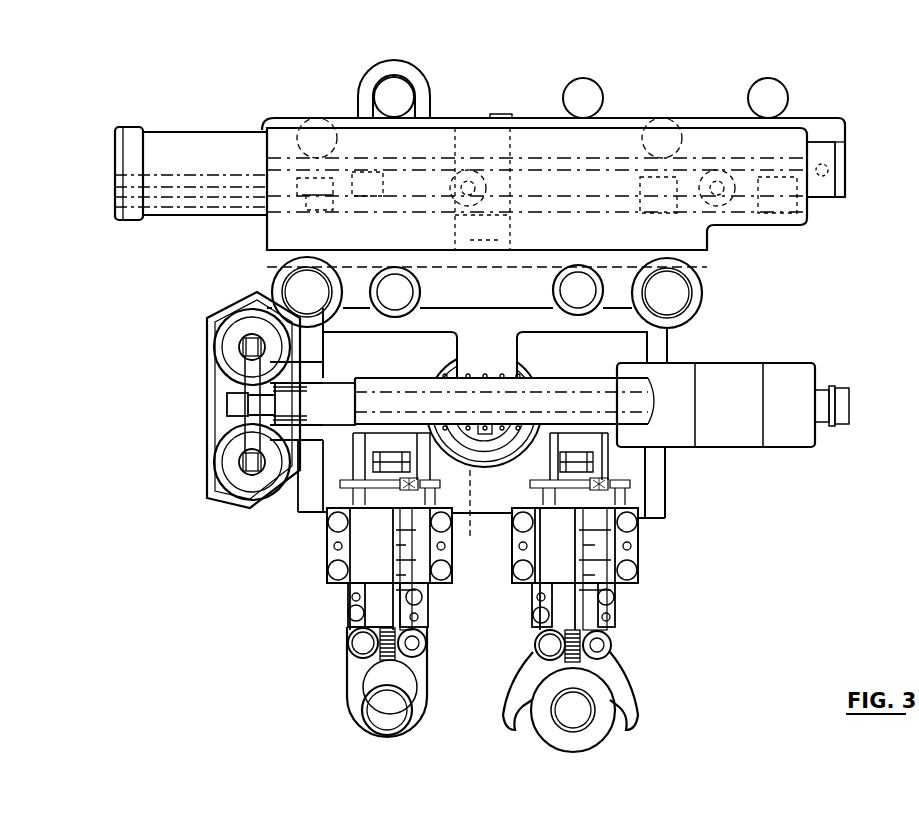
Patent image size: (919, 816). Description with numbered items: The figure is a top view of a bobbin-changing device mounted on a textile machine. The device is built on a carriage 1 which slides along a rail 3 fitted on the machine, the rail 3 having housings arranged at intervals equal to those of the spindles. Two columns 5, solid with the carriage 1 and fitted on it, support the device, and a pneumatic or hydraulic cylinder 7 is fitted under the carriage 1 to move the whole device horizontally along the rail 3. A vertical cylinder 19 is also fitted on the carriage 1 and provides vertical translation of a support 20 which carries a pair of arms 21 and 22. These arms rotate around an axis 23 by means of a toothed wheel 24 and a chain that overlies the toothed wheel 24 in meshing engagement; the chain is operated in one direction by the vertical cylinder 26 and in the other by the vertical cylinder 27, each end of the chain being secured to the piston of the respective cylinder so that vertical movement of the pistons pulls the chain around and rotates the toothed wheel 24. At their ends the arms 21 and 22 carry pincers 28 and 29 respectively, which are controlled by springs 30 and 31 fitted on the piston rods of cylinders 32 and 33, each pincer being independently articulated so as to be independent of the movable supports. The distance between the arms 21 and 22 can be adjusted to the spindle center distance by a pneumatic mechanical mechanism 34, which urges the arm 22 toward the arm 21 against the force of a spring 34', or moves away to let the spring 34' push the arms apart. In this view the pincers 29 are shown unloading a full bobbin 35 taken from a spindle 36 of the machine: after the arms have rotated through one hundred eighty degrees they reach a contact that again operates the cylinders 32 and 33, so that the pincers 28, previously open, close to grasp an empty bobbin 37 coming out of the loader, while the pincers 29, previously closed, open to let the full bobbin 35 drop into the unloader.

The carriage 1 is at (280, 227).
The rail 3 is at (840, 137).
The columns 5 is at (298, 287).
The pneumatic or hydraulic cylinder 7 is at (157, 215).
The vertical cylinder 19 is at (467, 517).
The support 20 is at (657, 469).
The arm 21 is at (350, 611).
The arm 22 is at (600, 614).
The axis 23 is at (228, 401).
The toothed wheel 24 is at (248, 431).
The vertical cylinder 26 is at (232, 337).
The vertical cylinder 27 is at (232, 474).
The pincers 28 is at (355, 683).
The pincers 29 is at (510, 711).
The spring 30 is at (404, 660).
The spring 31 is at (530, 670).
The cylinder 32 is at (370, 561).
The cylinder 33 is at (610, 559).
The pneumatic mechanical mechanism 34 is at (733, 422).
The spring 34' is at (484, 404).
The full bobbin 35 is at (555, 741).
The spindle 36 is at (405, 95).
The empty bobbin 37 is at (390, 722).